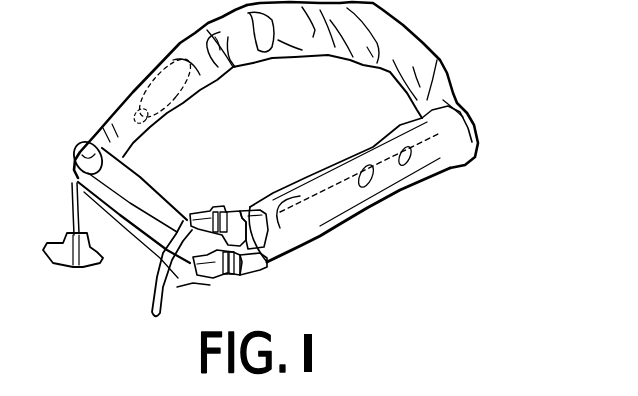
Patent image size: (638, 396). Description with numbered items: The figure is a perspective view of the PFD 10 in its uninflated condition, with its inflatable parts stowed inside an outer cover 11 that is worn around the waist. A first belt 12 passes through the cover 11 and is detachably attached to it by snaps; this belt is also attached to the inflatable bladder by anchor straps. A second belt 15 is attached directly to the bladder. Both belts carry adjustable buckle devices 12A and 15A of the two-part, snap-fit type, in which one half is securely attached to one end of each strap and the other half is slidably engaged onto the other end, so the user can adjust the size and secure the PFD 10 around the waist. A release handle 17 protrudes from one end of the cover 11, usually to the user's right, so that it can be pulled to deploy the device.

The PFD 10 is at (396, 212).
The outer cover 11 is at (458, 158).
The first belt 12 is at (246, 206).
The adjustable buckle device 12A is at (208, 208).
The second belt 15 is at (270, 263).
The adjustable buckle device 15A is at (222, 272).
The release handle 17 is at (82, 262).